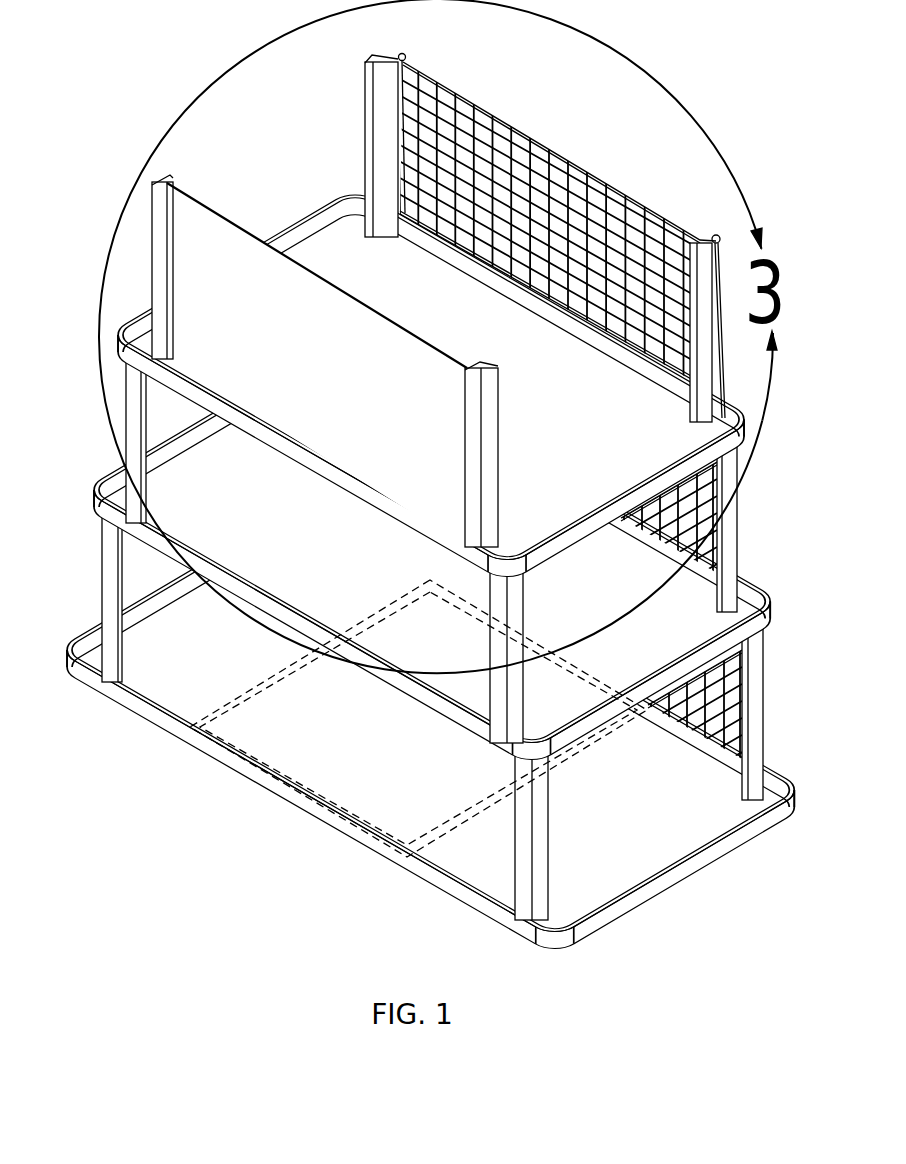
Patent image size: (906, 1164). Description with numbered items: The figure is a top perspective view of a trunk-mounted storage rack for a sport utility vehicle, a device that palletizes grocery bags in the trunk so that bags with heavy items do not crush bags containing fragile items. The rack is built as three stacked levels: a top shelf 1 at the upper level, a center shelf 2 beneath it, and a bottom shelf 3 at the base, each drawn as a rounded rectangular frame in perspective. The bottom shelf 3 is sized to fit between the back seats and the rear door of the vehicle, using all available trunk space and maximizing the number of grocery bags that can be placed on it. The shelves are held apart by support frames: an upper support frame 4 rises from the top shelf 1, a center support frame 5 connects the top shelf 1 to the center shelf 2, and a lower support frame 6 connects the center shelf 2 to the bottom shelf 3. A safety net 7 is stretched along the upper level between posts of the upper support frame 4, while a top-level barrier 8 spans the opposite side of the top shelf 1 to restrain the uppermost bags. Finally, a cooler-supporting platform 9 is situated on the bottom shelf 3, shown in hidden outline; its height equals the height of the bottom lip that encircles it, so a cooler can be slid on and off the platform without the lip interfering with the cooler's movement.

The top shelf 1 is at (118, 347).
The center shelf 2 is at (94, 503).
The bottom shelf 3 is at (68, 663).
The upper support frame 4 is at (372, 137).
The center support frame 5 is at (735, 524).
The lower support frame 6 is at (762, 705).
The safety net 7 is at (590, 175).
The top-level barrier 8 is at (402, 335).
The cooler-supporting platform 9 is at (246, 693).